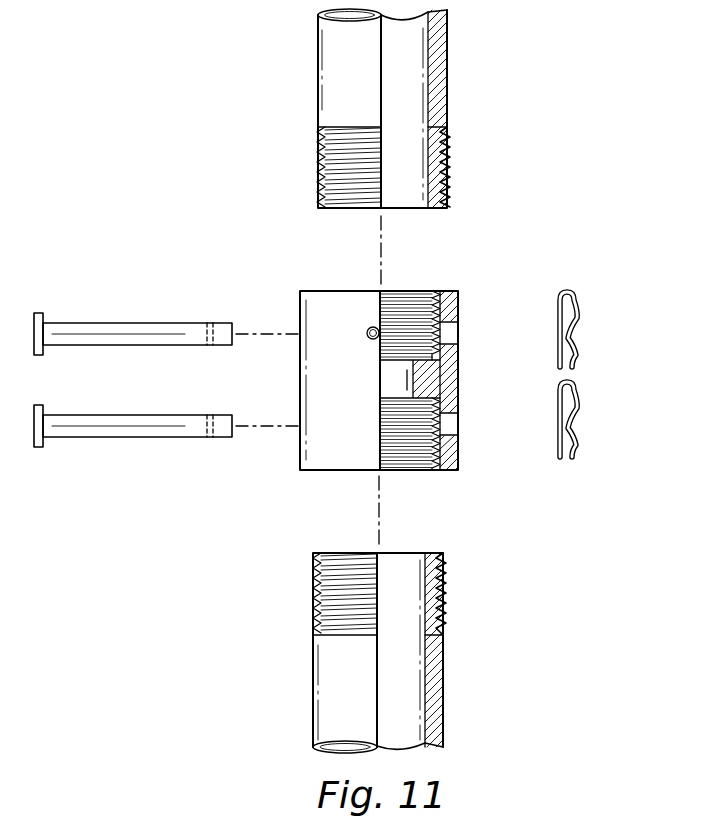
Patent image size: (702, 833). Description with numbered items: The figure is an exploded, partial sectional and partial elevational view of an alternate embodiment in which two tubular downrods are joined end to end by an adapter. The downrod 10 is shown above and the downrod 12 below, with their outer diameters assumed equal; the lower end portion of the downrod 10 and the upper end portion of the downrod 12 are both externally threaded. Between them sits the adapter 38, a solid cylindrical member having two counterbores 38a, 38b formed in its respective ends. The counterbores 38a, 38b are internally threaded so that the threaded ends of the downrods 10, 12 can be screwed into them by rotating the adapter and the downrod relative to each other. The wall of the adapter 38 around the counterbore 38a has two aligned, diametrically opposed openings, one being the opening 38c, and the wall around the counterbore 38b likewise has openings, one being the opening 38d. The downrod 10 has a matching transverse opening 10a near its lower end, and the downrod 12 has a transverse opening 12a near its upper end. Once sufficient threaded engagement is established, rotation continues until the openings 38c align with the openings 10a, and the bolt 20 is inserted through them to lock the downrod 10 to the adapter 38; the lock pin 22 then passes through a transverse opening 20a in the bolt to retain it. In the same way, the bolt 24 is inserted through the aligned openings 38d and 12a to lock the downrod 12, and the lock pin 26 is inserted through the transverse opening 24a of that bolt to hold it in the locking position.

The downrod 10 is at (318, 70).
The transverse opening 10a is at (449, 163).
The downrod 12 is at (313, 688).
The transverse opening 12a is at (446, 598).
The adapter 38 is at (330, 289).
The counterbore 38a is at (406, 306).
The counterbore 38b is at (408, 452).
The opening 38c is at (454, 331).
The opening 38d is at (454, 428).
The bolt 20 is at (118, 323).
The transverse opening 20a is at (199, 330).
The bolt 24 is at (118, 437).
The transverse opening 24a is at (199, 430).
The lock pin 22 is at (583, 300).
The lock pin 26 is at (583, 390).